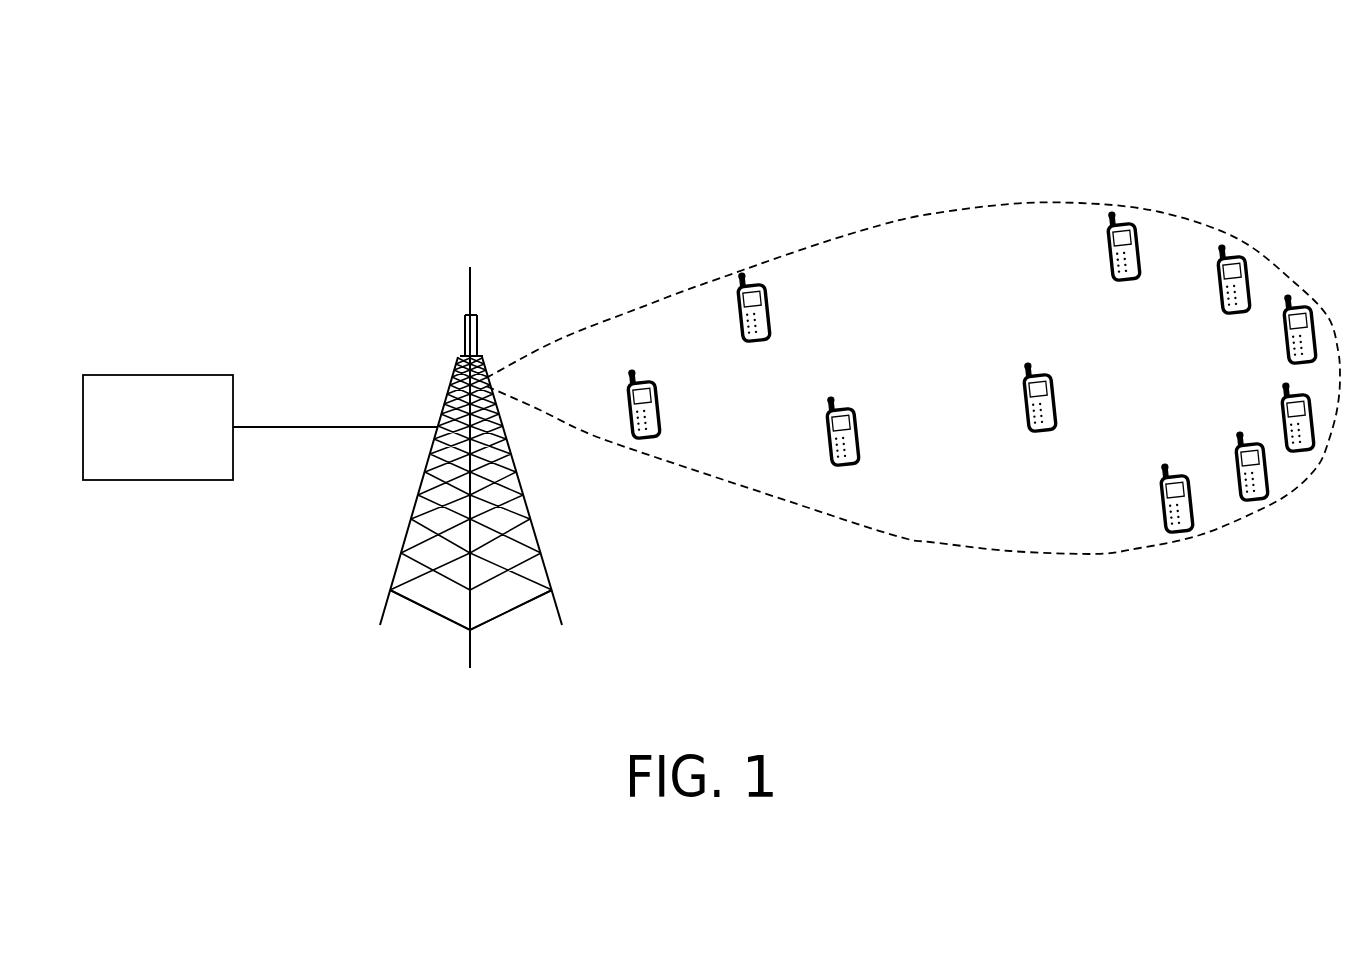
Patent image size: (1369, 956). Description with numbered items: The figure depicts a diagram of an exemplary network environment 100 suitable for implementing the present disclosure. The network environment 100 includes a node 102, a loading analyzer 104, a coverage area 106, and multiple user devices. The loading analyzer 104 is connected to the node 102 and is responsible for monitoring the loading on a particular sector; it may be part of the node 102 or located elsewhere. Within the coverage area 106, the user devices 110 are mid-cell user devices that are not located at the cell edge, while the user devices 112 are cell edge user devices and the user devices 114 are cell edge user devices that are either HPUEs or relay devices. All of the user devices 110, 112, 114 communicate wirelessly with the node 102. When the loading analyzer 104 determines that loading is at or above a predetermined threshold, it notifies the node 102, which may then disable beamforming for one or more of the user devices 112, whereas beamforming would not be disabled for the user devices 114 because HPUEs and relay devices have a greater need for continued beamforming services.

The network environment 100 is at (112, 143).
The node 102 is at (458, 379).
The loading analyzer 104 is at (140, 375).
The coverage area 106 is at (848, 232).
The user devices 110 is at (770, 304).
The user devices 112 is at (1231, 257).
The user devices 114 is at (1120, 222).